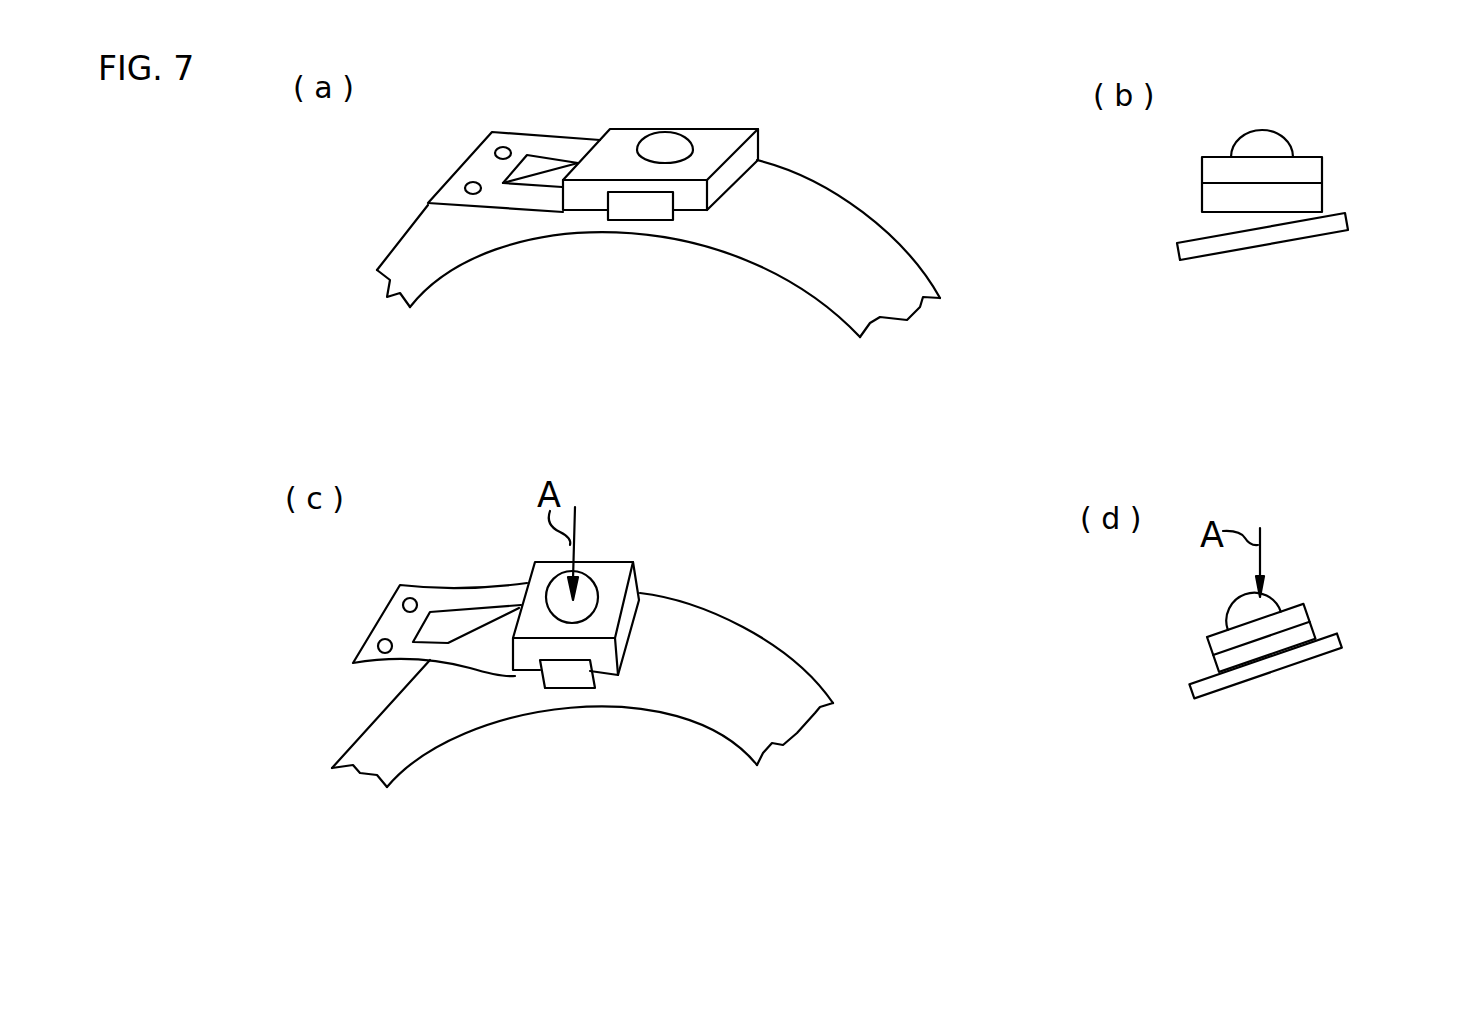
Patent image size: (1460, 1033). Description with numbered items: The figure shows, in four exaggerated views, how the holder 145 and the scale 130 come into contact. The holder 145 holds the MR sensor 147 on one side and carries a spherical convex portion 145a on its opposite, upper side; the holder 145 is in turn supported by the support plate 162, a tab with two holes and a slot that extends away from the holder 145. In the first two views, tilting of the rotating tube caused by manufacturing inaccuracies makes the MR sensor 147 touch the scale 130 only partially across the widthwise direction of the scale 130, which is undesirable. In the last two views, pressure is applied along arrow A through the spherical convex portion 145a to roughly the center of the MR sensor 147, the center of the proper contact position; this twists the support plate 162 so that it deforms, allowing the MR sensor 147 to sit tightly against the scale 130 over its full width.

The scale 130 is at (838, 222).
The holder 145 is at (622, 142).
The spherical convex portion 145a is at (665, 132).
The MR sensor 147 is at (638, 212).
The support plate 162 is at (556, 146).